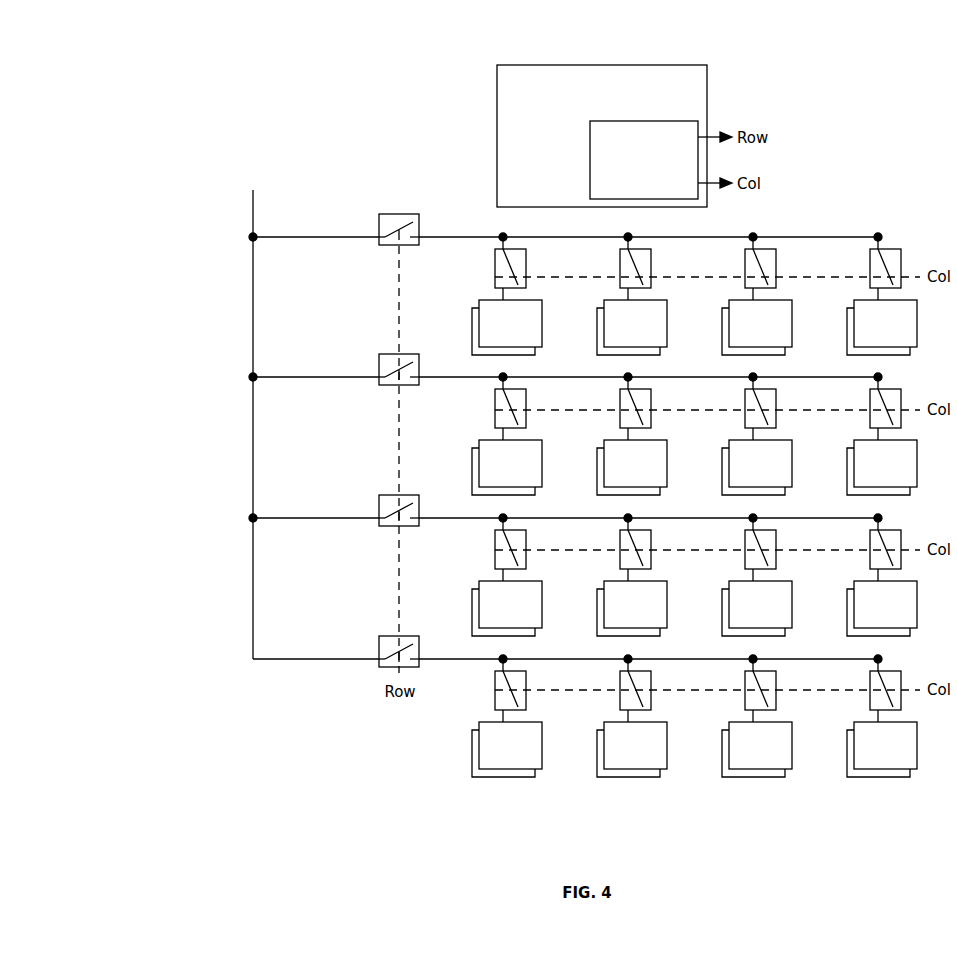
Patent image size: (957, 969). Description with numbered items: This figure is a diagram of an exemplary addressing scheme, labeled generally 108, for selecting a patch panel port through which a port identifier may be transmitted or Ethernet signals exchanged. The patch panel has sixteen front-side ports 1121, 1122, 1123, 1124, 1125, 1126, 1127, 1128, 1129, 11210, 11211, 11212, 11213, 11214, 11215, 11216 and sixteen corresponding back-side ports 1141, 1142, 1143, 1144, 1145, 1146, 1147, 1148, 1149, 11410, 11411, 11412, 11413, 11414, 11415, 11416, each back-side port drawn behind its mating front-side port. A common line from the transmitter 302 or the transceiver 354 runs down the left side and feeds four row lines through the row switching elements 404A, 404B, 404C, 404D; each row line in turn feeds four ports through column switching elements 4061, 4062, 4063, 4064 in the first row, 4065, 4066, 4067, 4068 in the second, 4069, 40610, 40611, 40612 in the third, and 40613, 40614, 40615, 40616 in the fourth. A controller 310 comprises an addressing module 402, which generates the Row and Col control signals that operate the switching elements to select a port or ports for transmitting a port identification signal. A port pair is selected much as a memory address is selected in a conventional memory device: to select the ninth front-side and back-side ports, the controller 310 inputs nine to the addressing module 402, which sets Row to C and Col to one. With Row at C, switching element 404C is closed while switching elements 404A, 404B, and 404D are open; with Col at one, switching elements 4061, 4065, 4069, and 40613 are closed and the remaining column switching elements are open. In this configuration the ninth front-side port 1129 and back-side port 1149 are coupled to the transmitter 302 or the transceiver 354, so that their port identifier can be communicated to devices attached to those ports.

The transducer array 108 is at (82, 111).
The transmitter 302 is at (260, 157).
The transceiver 354 is at (260, 178).
The controller 310 is at (602, 136).
The addressing module 402 is at (644, 160).
The switching element 404A is at (378, 228).
The switching element 404B is at (378, 361).
The switching element 404C is at (378, 502).
The switching element 404D is at (378, 643).
The switching element 4061 is at (496, 259).
The switching element 4062 is at (621, 259).
The switching element 4063 is at (746, 259).
The switching element 4064 is at (871, 259).
The switching element 4065 is at (496, 399).
The switching element 4066 is at (621, 399).
The switching element 4067 is at (746, 399).
The switching element 4068 is at (871, 399).
The switching element 4069 is at (496, 540).
The switching element 40610 is at (621, 540).
The switching element 40611 is at (746, 540).
The switching element 40612 is at (871, 540).
The switching element 40613 is at (496, 681).
The switching element 40614 is at (621, 681).
The switching element 40615 is at (746, 681).
The switching element 40616 is at (871, 681).
The front-side port 1121 is at (510, 323).
The front-side port 1122 is at (635, 323).
The front-side port 1123 is at (760, 323).
The front-side port 1124 is at (885, 323).
The front-side port 1125 is at (510, 463).
The front-side port 1126 is at (635, 463).
The front-side port 1127 is at (760, 463).
The front-side port 1128 is at (885, 463).
The front-side port 1129 is at (510, 604).
The front-side port 11210 is at (635, 604).
The front-side port 11211 is at (760, 604).
The front-side port 11212 is at (885, 604).
The front-side port 11213 is at (510, 745).
The front-side port 11214 is at (635, 745).
The front-side port 11215 is at (760, 745).
The front-side port 11216 is at (885, 745).
The back-side port 1141 is at (472, 333).
The back-side port 1142 is at (597, 333).
The back-side port 1143 is at (722, 333).
The back-side port 1144 is at (847, 333).
The back-side port 1145 is at (472, 473).
The back-side port 1146 is at (597, 473).
The back-side port 1147 is at (722, 473).
The back-side port 1148 is at (847, 473).
The back-side port 1149 is at (472, 614).
The back-side port 11410 is at (597, 614).
The back-side port 11411 is at (722, 614).
The back-side port 11412 is at (847, 614).
The back-side port 11413 is at (472, 755).
The back-side port 11414 is at (597, 755).
The back-side port 11415 is at (722, 755).
The back-side port 11416 is at (847, 755).